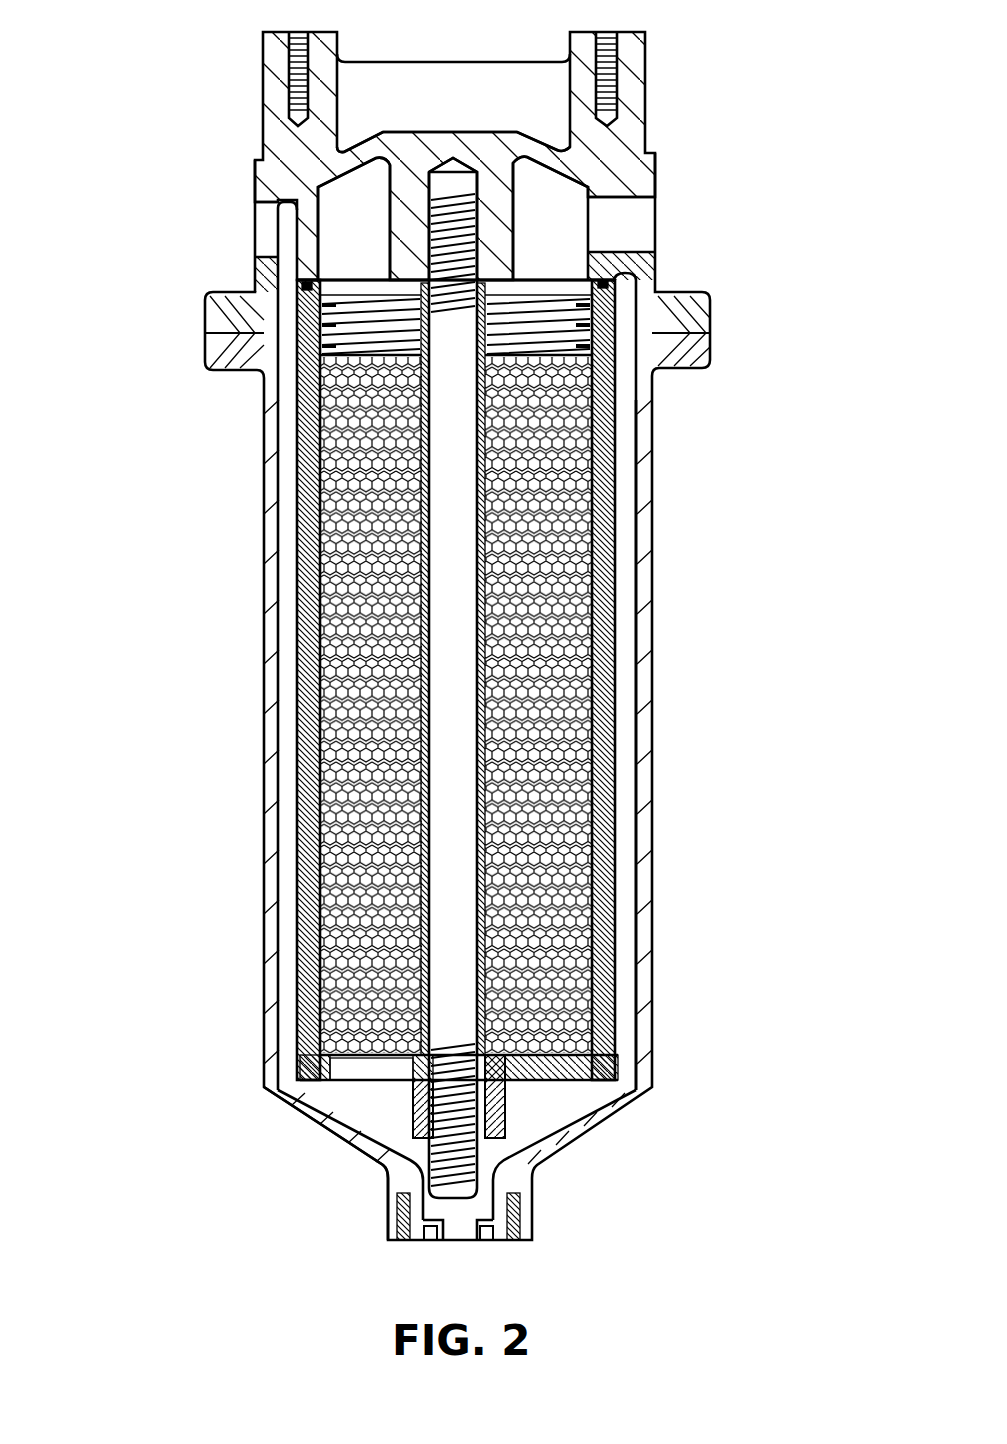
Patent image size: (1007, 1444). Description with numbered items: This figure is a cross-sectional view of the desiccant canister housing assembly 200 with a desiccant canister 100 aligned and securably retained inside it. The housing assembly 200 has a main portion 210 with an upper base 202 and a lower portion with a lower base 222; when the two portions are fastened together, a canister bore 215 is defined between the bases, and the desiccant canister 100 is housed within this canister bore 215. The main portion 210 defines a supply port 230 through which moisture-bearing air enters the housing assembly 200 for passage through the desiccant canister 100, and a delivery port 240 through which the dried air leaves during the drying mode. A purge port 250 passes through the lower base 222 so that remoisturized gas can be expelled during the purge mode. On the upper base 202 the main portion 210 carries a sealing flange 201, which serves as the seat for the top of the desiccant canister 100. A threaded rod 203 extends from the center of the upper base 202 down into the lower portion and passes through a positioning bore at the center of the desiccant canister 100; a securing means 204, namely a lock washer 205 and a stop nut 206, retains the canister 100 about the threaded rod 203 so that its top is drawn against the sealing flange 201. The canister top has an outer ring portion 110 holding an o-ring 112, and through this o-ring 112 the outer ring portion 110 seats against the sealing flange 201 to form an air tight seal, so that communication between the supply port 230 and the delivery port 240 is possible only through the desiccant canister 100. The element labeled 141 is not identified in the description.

The desiccant canister 100 is at (623, 735).
The outer ring portion 110 is at (603, 300).
The o-ring 112 is at (600, 298).
The center tube 141 is at (432, 644).
The desiccant canister housing assembly 200 is at (243, 297).
The sealing flange 201 is at (366, 288).
The upper base 202 is at (478, 135).
The threaded rod 203 is at (445, 828).
The securing means 204 is at (503, 1150).
The lock washer 205 is at (430, 1082).
The stop nut 206 is at (505, 1118).
The main portion 210 is at (262, 92).
The canister bore 215 is at (625, 985).
The lower base 222 is at (393, 1177).
The supply port 230 is at (262, 225).
The delivery port 240 is at (615, 213).
The purge port 250 is at (450, 1228).